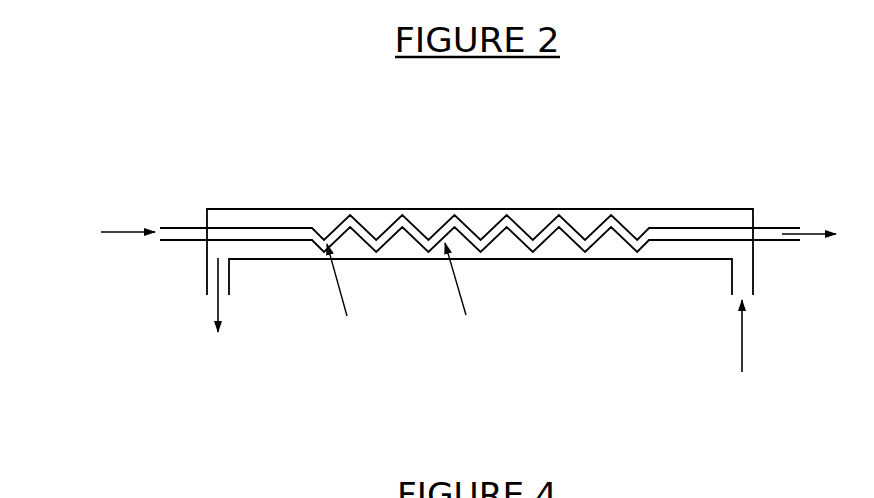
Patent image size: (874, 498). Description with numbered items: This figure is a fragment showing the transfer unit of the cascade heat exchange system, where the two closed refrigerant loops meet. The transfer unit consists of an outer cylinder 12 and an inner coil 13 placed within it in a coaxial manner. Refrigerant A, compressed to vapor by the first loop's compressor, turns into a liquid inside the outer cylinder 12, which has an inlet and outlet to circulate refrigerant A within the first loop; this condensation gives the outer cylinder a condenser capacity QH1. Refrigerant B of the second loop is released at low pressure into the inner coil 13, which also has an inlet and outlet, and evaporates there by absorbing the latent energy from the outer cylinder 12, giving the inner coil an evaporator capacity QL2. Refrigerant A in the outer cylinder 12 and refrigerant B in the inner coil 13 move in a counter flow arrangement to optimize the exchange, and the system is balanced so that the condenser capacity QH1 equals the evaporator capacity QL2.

The outer cylinder 12 is at (383, 208).
The inner coil 13 is at (633, 222).
The refrigerant A is at (742, 362).
The refrigerant B is at (102, 230).
The evaporator capacity QL2 is at (355, 307).
The condenser capacity QH1 is at (472, 306).